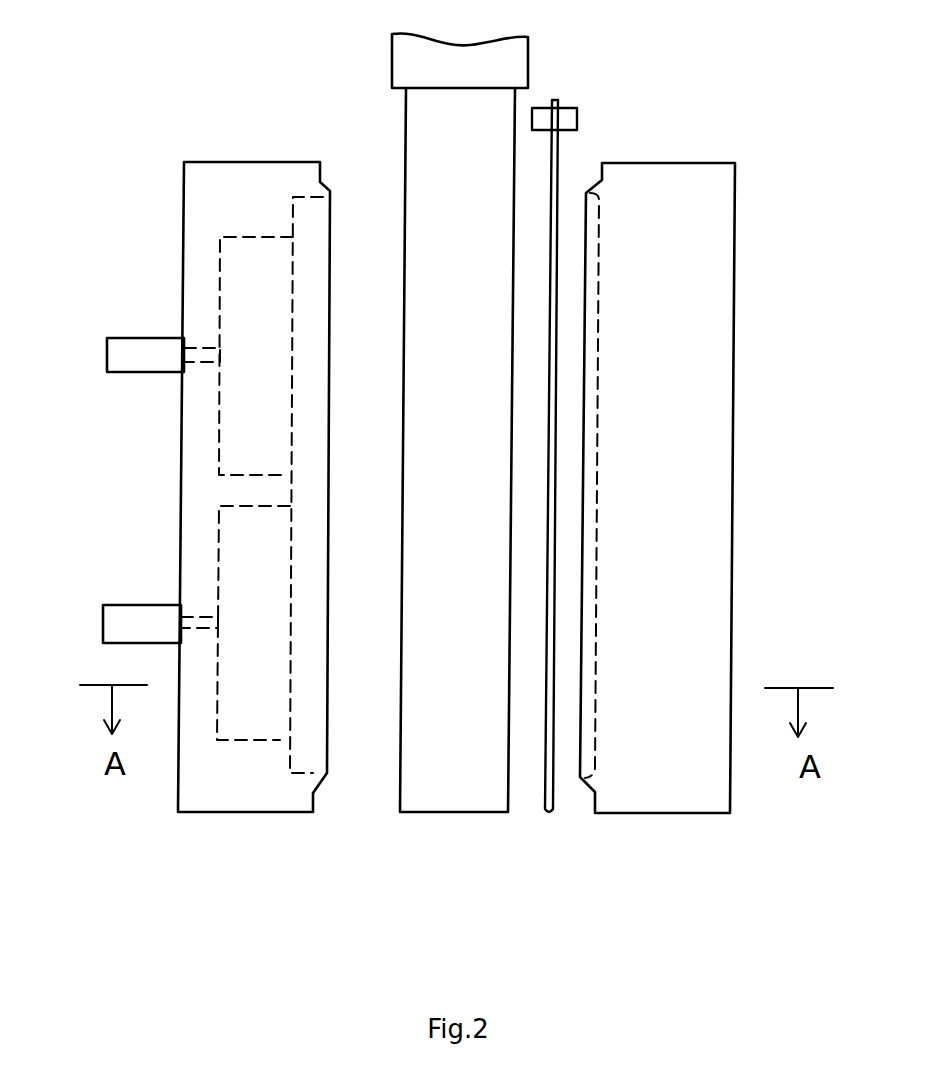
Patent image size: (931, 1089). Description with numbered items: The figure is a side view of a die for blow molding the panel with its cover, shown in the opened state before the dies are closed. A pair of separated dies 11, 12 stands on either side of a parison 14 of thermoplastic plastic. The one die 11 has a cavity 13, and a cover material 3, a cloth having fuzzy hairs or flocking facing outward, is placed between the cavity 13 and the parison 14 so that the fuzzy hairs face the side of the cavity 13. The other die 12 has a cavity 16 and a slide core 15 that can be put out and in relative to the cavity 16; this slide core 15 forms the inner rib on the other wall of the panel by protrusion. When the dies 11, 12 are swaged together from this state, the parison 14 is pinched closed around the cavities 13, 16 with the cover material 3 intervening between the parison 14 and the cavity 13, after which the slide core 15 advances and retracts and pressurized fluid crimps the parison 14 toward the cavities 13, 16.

The cover material 3 is at (558, 157).
The die 11 is at (715, 355).
The die 12 is at (200, 247).
The cavity 13 is at (592, 447).
The parison 14 is at (450, 805).
The slide core 15 is at (192, 348).
The cavity 16 is at (220, 400).